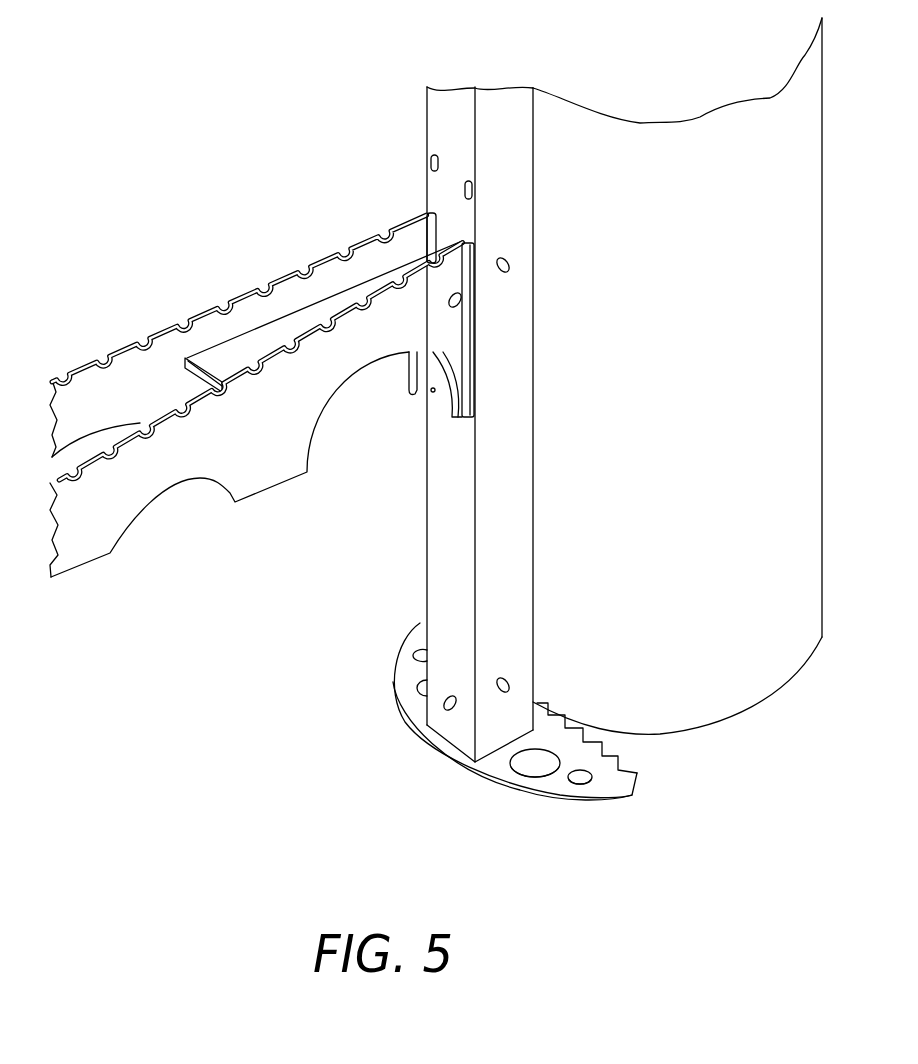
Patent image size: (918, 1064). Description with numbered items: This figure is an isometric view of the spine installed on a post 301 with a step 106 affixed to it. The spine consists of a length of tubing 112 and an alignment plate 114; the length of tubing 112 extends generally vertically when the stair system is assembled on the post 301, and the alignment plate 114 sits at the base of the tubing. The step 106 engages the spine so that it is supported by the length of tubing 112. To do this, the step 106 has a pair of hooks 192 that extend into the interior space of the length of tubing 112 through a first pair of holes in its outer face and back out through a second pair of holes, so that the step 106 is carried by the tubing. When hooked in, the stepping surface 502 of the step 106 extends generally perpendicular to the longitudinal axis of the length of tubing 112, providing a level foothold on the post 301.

The step 106 is at (70, 540).
The length of tubing 112 is at (453, 570).
The alignment plate 114 is at (495, 768).
The pair of hooks 192 is at (463, 192).
The post 301 is at (745, 693).
The stepping surface 502 is at (248, 288).